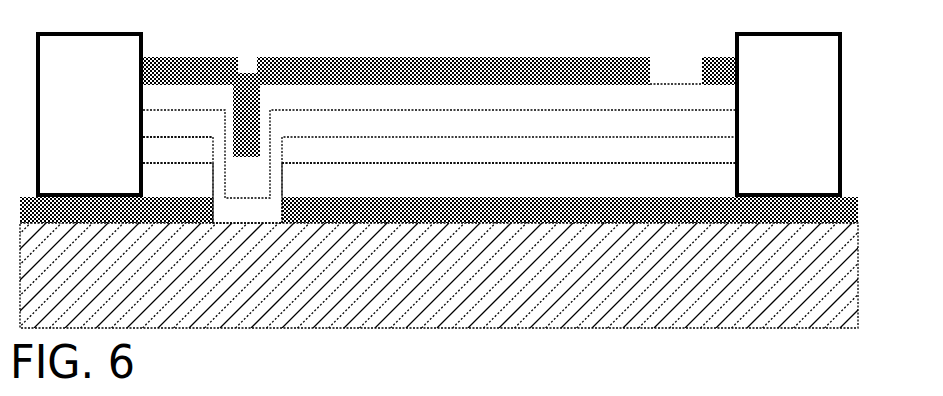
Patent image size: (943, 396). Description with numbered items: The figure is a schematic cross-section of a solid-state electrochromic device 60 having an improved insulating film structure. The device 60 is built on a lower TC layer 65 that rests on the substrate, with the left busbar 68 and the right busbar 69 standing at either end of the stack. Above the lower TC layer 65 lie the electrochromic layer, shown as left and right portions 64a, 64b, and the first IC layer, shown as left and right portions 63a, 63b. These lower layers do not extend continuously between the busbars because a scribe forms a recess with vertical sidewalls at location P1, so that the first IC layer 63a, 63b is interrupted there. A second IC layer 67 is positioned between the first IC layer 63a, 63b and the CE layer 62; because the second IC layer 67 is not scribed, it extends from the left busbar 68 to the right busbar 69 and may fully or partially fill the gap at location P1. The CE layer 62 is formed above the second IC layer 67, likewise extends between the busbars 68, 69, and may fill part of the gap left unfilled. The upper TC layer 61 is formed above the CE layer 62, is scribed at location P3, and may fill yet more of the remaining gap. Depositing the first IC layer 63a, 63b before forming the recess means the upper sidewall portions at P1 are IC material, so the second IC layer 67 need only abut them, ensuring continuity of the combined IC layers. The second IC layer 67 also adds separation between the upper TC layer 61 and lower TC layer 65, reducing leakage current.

The solid-state electrochromic device 60 is at (452, 362).
The upper TC layer 61 is at (439, 107).
The CE layer 62 is at (439, 141).
The first IC layer 63a is at (178, 150).
The first IC layer 63b is at (508, 150).
The EC layer 64a is at (178, 180).
The EC layer 64b is at (508, 180).
The lower TC layer 65 is at (439, 210).
The second IC layer 67 is at (439, 166).
The left busbar 68 is at (89, 114).
The right busbar 69 is at (788, 114).
The P1 scribe location P1 is at (247, 200).
The P3 scribe location P3 is at (676, 65).